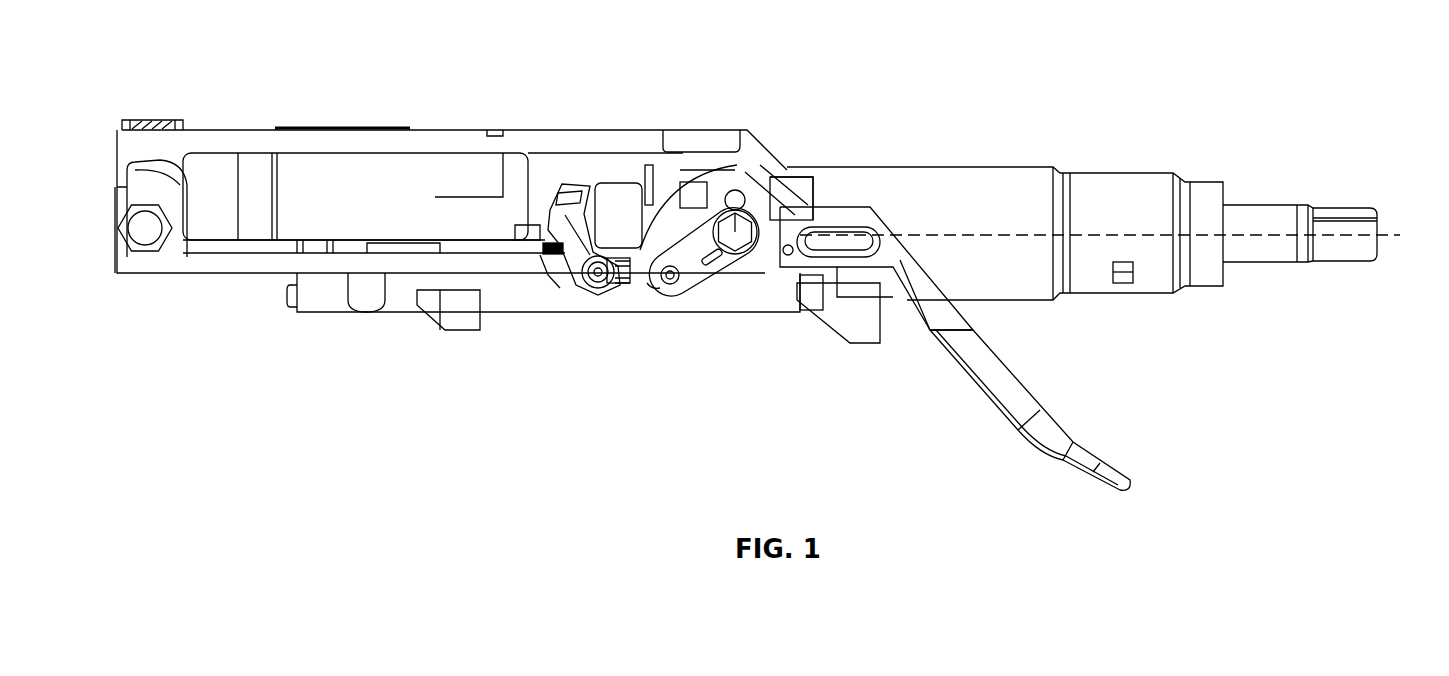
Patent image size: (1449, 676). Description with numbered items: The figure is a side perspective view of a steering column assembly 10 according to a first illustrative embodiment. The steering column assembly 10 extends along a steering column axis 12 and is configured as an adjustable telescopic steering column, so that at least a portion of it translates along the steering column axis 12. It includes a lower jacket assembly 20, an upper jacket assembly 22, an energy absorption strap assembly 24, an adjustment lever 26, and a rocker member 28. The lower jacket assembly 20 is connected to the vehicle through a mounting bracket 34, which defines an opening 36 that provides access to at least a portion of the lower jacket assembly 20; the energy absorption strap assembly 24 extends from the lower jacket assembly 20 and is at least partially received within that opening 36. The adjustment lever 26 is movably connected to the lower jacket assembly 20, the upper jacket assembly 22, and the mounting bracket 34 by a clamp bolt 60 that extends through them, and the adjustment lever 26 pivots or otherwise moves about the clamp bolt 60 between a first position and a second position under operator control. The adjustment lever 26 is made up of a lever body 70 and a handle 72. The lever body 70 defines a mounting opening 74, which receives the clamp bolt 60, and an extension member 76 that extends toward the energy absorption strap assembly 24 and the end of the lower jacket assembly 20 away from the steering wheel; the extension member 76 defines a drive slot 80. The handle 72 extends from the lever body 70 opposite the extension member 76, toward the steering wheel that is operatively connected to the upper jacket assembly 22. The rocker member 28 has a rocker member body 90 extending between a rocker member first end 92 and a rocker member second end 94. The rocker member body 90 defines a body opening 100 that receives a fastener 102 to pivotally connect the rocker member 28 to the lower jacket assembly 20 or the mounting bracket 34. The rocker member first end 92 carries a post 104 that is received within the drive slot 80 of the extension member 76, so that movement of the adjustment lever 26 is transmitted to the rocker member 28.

The steering column assembly 10 is at (1196, 59).
The steering column axis 12 is at (1386, 232).
The lower jacket assembly 20 is at (320, 315).
The upper jacket assembly 22 is at (964, 163).
The energy absorption strap assembly 24 is at (524, 220).
The adjustment lever 26 is at (993, 426).
The rocker member 28 is at (623, 296).
The mounting bracket 34 is at (555, 150).
The opening 36 is at (618, 180).
The clamp bolt 60 is at (768, 250).
The lever body 70 is at (829, 207).
The handle 72 is at (1000, 386).
The mounting opening 74 is at (740, 258).
The extension member 76 is at (664, 295).
The drive slot 80 is at (736, 190).
The rocker member body 90 is at (567, 272).
The rocker member first end 92 is at (643, 247).
The rocker member second end 94 is at (571, 196).
The body opening 100 is at (585, 282).
The fastener 102 is at (597, 274).
The post 104 is at (674, 288).